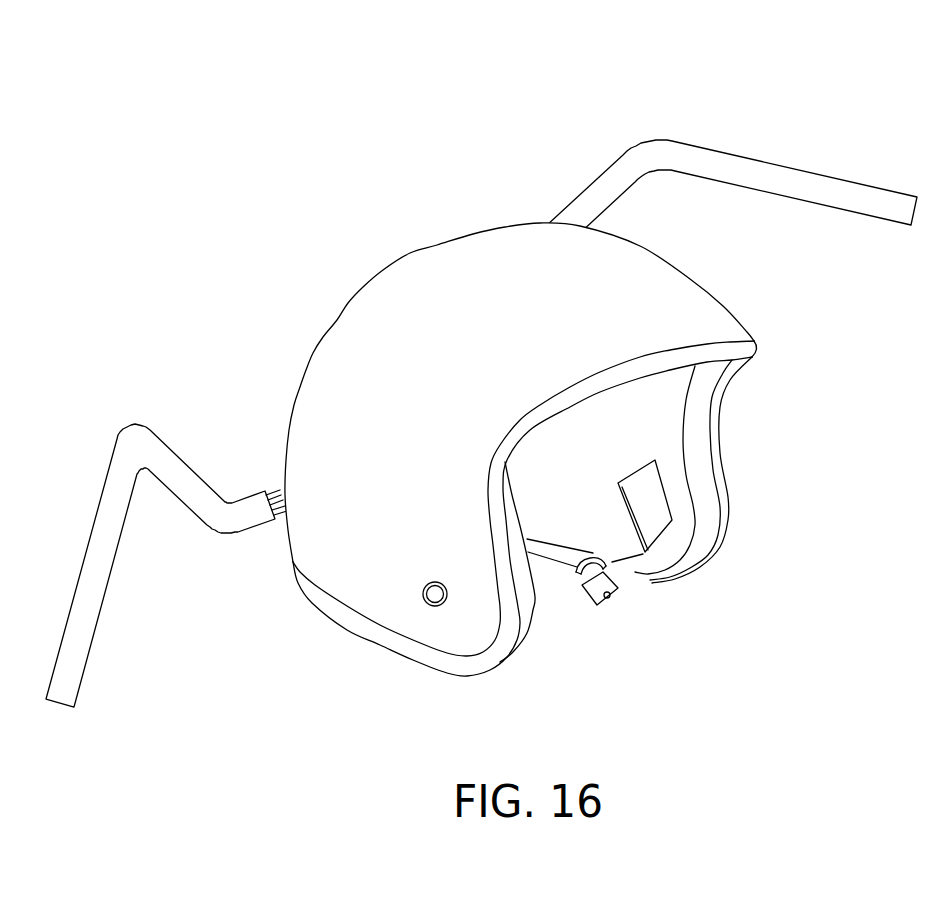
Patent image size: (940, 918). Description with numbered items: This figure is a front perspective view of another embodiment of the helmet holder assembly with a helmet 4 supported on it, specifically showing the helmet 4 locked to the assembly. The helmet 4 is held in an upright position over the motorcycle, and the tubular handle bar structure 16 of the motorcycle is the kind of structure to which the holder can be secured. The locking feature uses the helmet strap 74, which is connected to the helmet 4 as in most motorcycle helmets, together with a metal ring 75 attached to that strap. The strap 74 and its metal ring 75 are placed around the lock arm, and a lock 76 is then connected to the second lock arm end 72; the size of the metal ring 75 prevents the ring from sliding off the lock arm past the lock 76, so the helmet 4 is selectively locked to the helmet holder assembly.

The helmet 4 is at (230, 274).
The handle bar structure 16 is at (723, 163).
The second lock arm end 72 is at (568, 608).
The helmet strap 74 is at (637, 560).
The metal ring 75 is at (598, 560).
The lock 76 is at (597, 603).